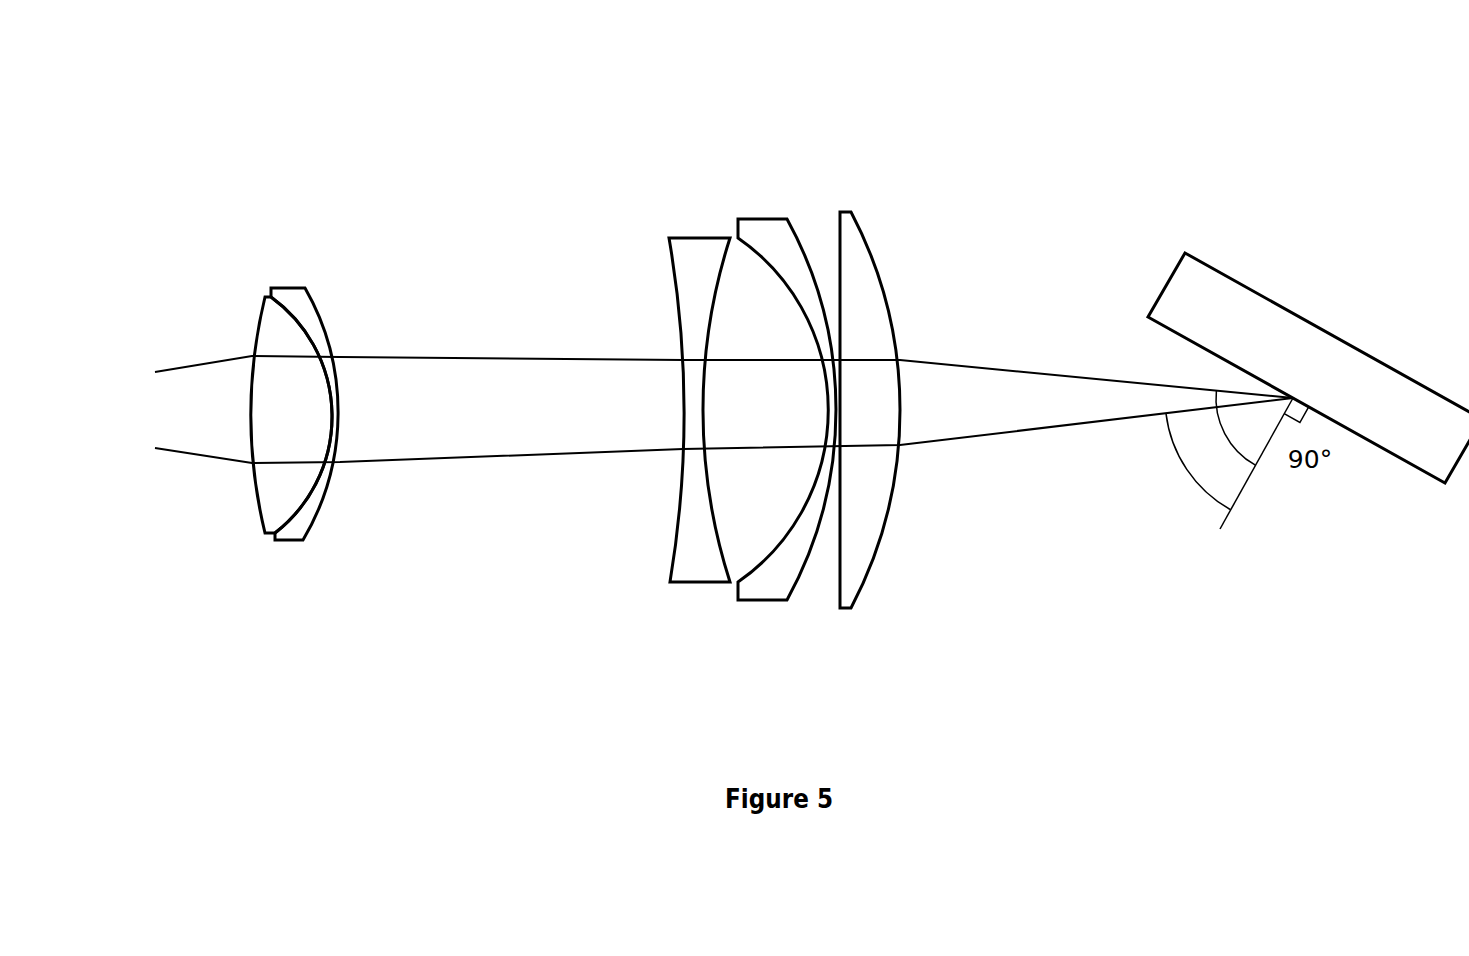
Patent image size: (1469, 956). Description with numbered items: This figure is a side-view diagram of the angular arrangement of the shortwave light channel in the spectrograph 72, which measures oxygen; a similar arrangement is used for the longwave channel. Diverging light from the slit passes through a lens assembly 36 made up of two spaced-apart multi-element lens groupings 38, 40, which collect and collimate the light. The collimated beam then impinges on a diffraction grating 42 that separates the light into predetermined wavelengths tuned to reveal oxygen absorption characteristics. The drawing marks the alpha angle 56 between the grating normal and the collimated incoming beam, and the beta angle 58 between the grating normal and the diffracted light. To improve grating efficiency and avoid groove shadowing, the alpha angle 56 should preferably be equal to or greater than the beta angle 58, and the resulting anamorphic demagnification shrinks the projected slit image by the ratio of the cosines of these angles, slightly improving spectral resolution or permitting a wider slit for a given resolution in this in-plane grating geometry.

The first spectrograph 72 is at (566, 172).
The lens assembly 36 is at (575, 489).
The multi-element lens grouping 38 is at (330, 555).
The multi-element lens grouping 40 is at (776, 451).
The diffraction grating 42 is at (1302, 315).
The alpha angle 56 is at (1240, 427).
The beta angle 58 is at (1190, 464).